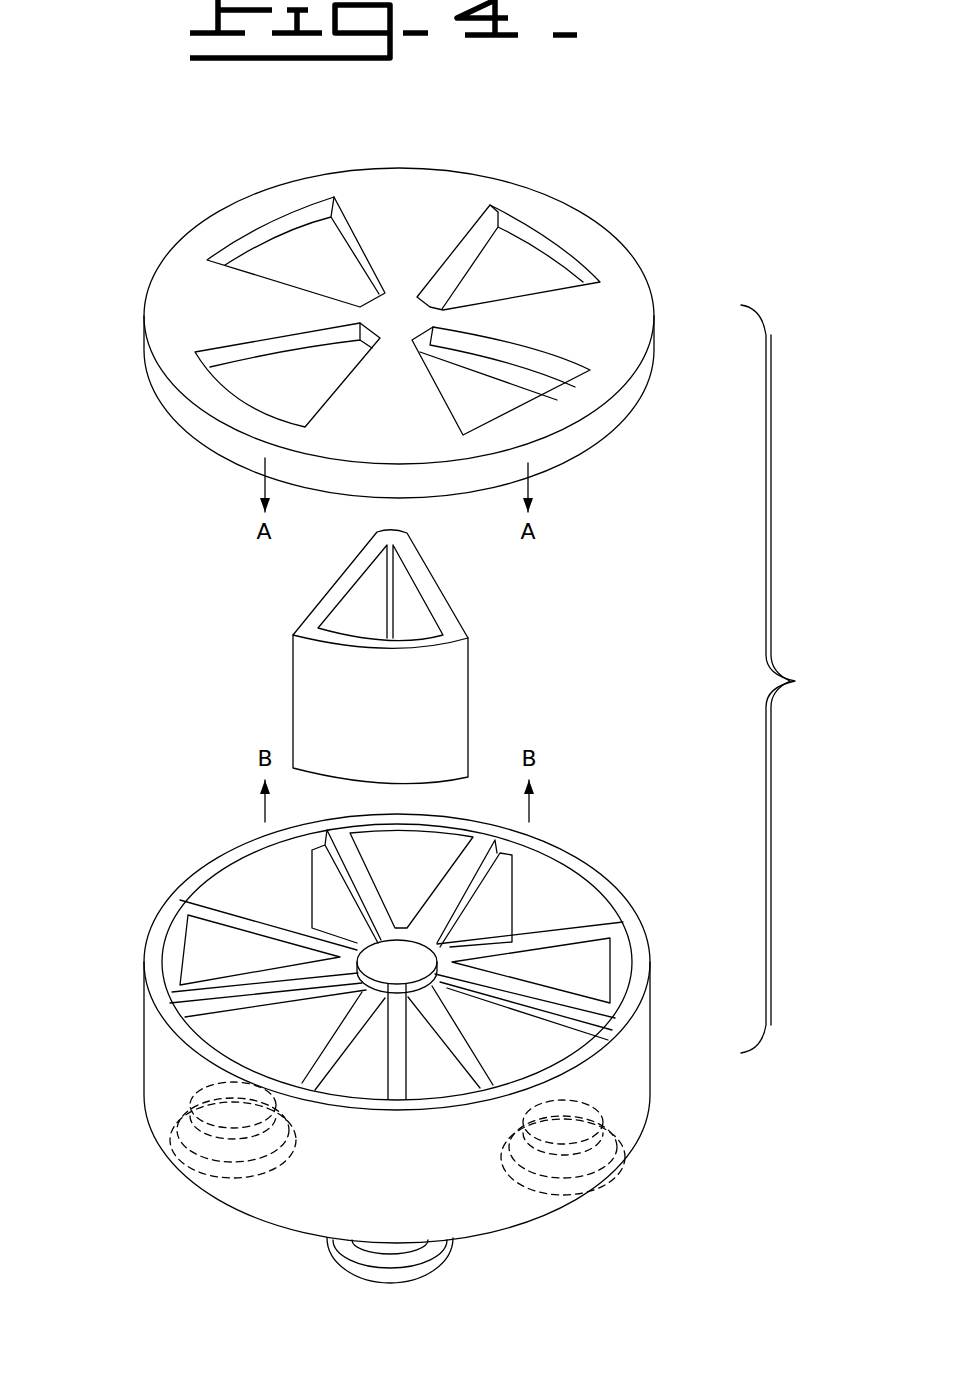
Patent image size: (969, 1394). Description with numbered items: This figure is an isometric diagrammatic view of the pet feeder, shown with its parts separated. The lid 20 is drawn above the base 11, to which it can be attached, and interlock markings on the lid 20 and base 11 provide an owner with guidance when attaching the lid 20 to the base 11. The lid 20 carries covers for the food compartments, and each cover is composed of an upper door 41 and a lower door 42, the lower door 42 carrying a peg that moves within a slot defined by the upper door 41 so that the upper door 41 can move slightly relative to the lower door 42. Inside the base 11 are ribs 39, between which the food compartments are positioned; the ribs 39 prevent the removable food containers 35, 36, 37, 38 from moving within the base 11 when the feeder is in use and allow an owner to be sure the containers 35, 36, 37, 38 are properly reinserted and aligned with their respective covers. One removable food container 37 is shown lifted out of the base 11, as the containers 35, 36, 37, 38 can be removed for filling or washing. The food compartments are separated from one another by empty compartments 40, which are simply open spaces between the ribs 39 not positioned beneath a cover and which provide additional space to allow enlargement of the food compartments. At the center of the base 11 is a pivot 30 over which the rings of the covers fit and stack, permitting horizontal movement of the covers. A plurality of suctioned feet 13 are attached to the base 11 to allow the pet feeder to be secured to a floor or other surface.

The base 11 is at (141, 1053).
The suctioned feet 13 is at (620, 1178).
The lid 20 is at (354, 311).
The pivot 30 is at (390, 964).
The removable food container 35 is at (345, 824).
The removable food container 36 is at (165, 945).
The removable food container 37 is at (355, 603).
The removable food container 38 is at (628, 955).
The ribs 39 is at (315, 876).
The empty compartments 40 is at (238, 890).
The upper door 41 is at (489, 208).
The lower door 42 is at (491, 243).